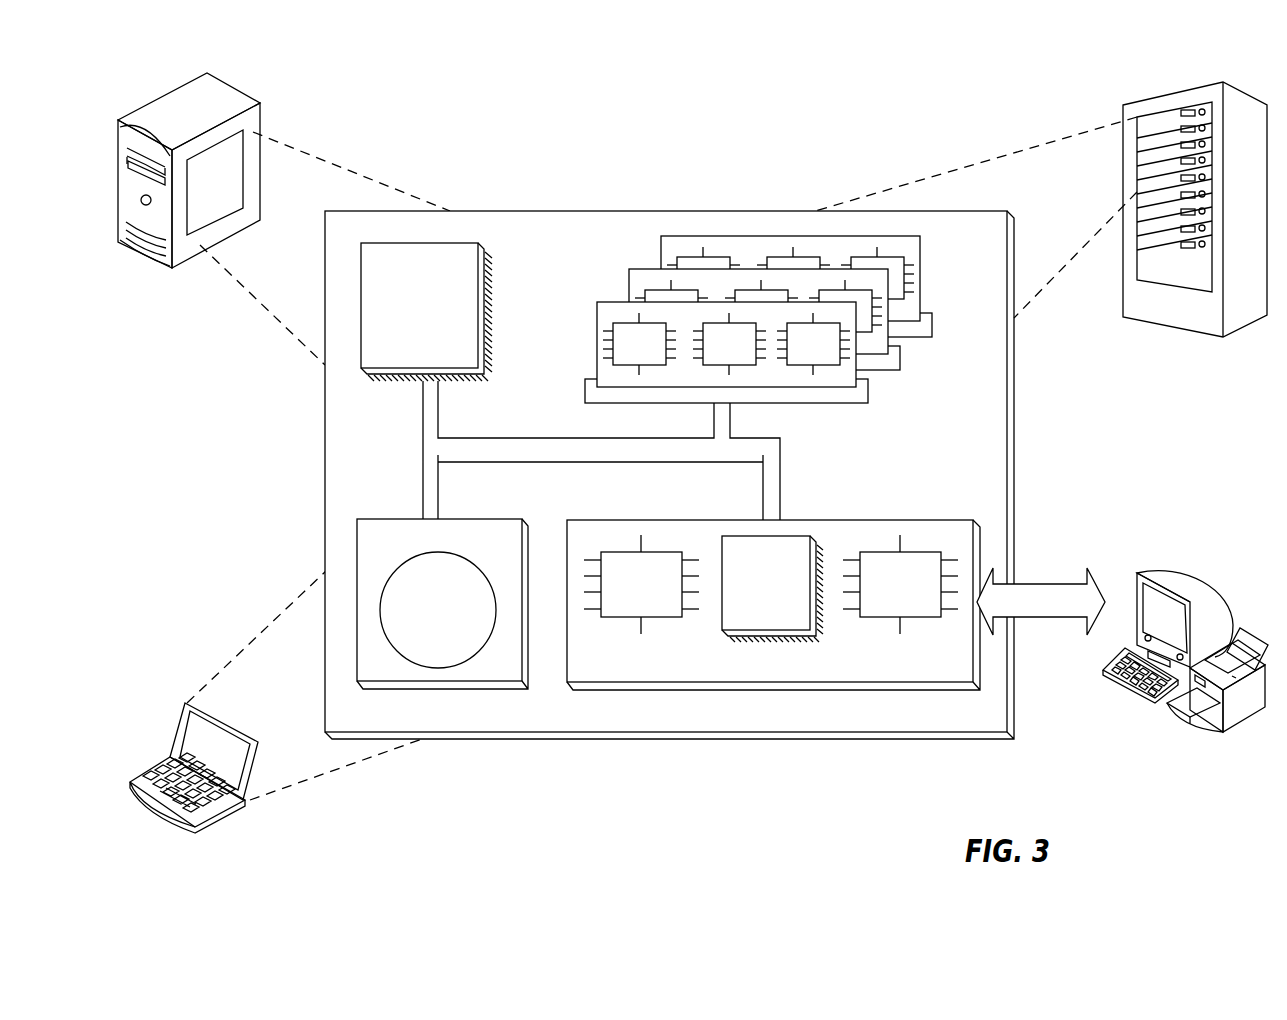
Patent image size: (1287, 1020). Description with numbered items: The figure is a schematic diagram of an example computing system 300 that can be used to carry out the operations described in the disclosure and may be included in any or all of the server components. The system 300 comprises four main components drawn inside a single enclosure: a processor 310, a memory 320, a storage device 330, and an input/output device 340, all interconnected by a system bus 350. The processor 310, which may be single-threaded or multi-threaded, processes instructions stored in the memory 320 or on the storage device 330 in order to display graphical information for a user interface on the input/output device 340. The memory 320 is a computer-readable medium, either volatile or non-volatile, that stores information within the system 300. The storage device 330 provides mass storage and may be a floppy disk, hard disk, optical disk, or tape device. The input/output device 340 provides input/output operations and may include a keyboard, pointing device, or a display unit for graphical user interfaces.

The computing system 300 is at (506, 137).
The processor 310 is at (469, 362).
The memory 320 is at (932, 370).
The storage device 330 is at (511, 673).
The input/output device 340 is at (1137, 578).
The system bus 350 is at (598, 454).